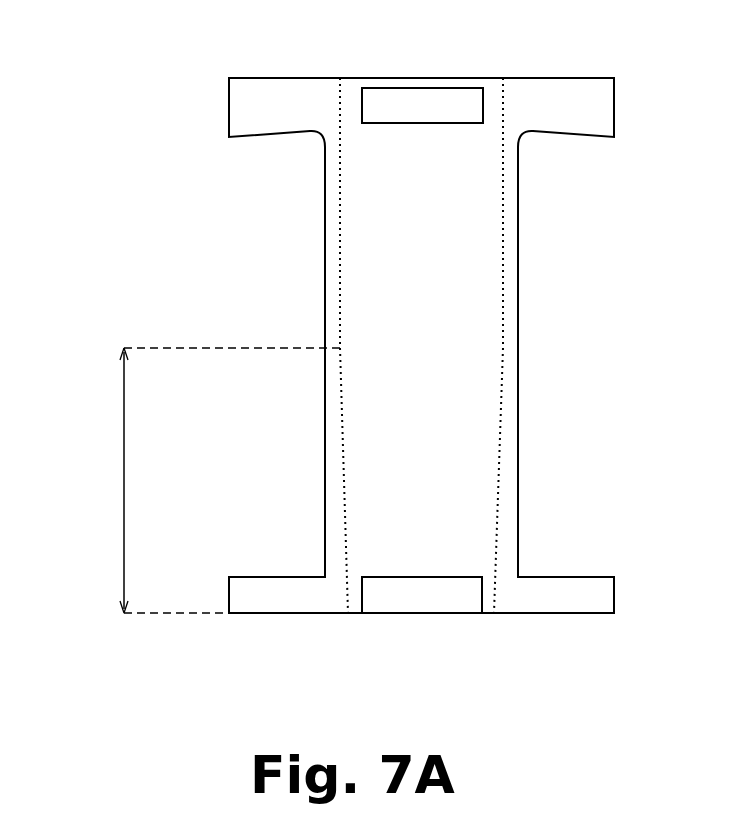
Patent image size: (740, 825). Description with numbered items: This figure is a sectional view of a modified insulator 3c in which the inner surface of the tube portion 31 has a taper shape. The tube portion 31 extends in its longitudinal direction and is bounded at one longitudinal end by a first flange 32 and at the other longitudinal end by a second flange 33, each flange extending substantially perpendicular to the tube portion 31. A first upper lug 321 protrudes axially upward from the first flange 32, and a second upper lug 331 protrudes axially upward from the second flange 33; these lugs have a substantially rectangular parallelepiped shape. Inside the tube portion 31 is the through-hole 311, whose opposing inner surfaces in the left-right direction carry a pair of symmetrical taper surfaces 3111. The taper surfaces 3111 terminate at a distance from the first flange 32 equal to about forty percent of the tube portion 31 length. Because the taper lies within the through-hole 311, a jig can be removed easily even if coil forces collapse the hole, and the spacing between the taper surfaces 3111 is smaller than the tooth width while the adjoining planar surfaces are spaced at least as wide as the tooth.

The insulator 3c is at (152, 93).
The second flange 33 is at (255, 90).
The second upper lug 331 is at (375, 92).
The tube portion 31 is at (518, 305).
The through-hole 311 is at (362, 223).
The taper surfaces 3111 is at (498, 465).
The first flange 32 is at (300, 603).
The first upper lug 321 is at (417, 603).